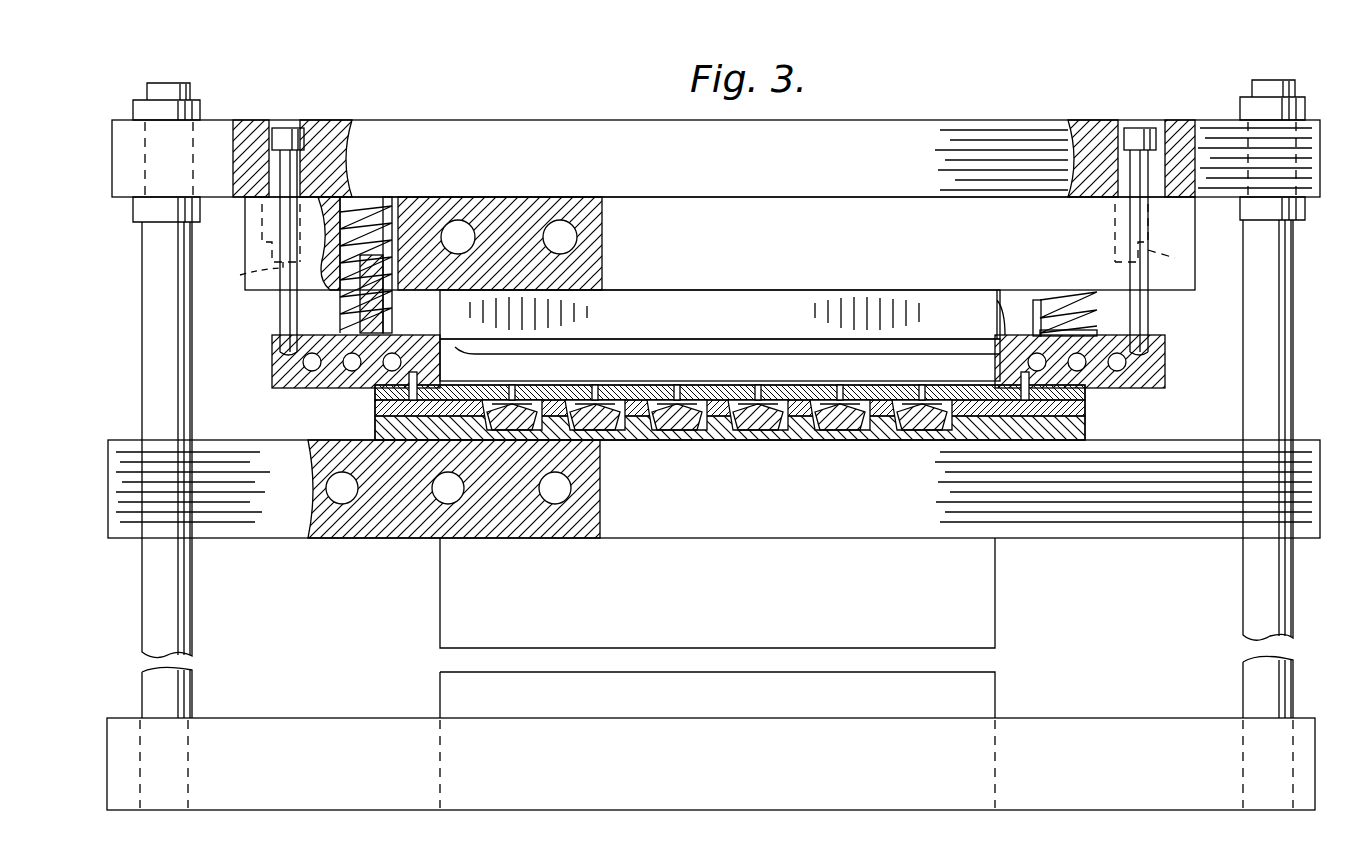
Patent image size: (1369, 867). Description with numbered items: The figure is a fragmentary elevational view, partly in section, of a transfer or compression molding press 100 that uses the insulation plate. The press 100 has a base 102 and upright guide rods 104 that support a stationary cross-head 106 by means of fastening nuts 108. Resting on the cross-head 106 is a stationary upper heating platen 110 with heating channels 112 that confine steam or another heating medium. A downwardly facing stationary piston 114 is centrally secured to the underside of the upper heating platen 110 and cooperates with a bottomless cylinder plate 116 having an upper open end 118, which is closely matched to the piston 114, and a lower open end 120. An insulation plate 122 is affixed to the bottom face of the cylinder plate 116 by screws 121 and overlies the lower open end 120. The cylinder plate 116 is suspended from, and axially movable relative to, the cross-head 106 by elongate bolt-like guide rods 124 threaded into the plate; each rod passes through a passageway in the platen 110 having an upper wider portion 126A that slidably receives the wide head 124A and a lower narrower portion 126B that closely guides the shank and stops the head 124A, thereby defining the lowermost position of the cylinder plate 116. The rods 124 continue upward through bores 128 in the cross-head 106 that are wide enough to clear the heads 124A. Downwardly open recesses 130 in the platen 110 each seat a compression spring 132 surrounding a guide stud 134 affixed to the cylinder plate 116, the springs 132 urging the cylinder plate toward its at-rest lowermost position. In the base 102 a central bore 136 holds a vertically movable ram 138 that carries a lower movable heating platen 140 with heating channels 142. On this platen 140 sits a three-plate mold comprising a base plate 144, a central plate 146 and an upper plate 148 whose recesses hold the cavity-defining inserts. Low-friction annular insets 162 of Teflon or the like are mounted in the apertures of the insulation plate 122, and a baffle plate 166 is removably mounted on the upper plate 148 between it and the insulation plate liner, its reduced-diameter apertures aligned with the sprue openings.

The press 100 is at (287, 78).
The base 102 is at (232, 725).
The upright guide rods 104 is at (142, 345).
The stationary cross-head 106 is at (958, 134).
The fastening nuts 108 is at (198, 100).
The stationary upper heating platen 110 is at (841, 210).
The heating channels 112 is at (460, 218).
The stationary piston 114 is at (728, 325).
The bottomless cylinder plate 116 is at (285, 388).
The upper open end 118 is at (1015, 314).
The lower open end 120 is at (455, 381).
The screws 121 is at (1027, 400).
The insulation plate 122 is at (378, 392).
The bolt-like guide rods 124 is at (280, 310).
The wide head 124A is at (300, 128).
The upper wider portion 126A is at (262, 230).
The lower narrower portion 126B is at (236, 274).
The bores 128 is at (338, 152).
The downwardly open recesses 130 is at (392, 215).
The compression spring 132 is at (372, 210).
The guide stud 134 is at (384, 312).
The bore 136 is at (1000, 757).
The ram 138 is at (440, 650).
The lower movable heating platen 140 is at (118, 440).
The heating channels 142 is at (432, 488).
The base plate 144 is at (1088, 428).
The central plate 146 is at (1088, 414).
The upper plate 148 is at (1088, 400).
The low-friction annular inset 162 is at (590, 385).
The baffle plate 166 is at (960, 395).